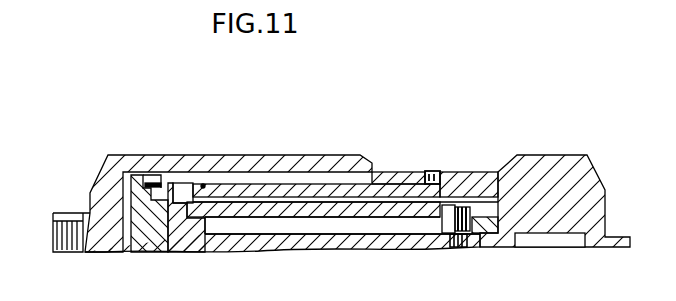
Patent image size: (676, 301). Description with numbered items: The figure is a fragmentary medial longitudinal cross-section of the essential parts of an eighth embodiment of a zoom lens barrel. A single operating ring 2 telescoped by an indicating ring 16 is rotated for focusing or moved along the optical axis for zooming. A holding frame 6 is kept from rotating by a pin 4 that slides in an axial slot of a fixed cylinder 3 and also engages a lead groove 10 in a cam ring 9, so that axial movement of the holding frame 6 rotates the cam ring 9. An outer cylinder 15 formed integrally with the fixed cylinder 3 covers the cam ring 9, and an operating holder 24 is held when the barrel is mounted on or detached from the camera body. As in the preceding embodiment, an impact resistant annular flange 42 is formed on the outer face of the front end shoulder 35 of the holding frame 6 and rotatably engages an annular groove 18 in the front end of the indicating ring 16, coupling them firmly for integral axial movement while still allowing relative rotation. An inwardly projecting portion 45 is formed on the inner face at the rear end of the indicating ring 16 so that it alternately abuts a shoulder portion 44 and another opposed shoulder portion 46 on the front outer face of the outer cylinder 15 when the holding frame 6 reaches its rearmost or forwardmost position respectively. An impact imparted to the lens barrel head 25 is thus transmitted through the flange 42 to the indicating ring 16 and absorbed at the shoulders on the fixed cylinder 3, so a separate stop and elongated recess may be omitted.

The operating ring 2 is at (303, 160).
The fixed cylinder 3 is at (197, 230).
The pin 4 is at (472, 200).
The holding frame 6 is at (353, 242).
The cam ring 9 is at (362, 207).
The lead groove 10 is at (417, 217).
The outer cylinder 15 is at (260, 190).
The indicating cylinder 16 is at (396, 172).
The annular groove 18 is at (156, 188).
The operating holder 24 is at (577, 172).
The lens barrel head 25 is at (68, 217).
The front end shoulder 35 is at (168, 224).
The annular flange 42 is at (146, 184).
The shoulder portion 44 is at (440, 172).
The inwardly projecting portion 45 is at (424, 172).
The shoulder portion 46 is at (203, 185).